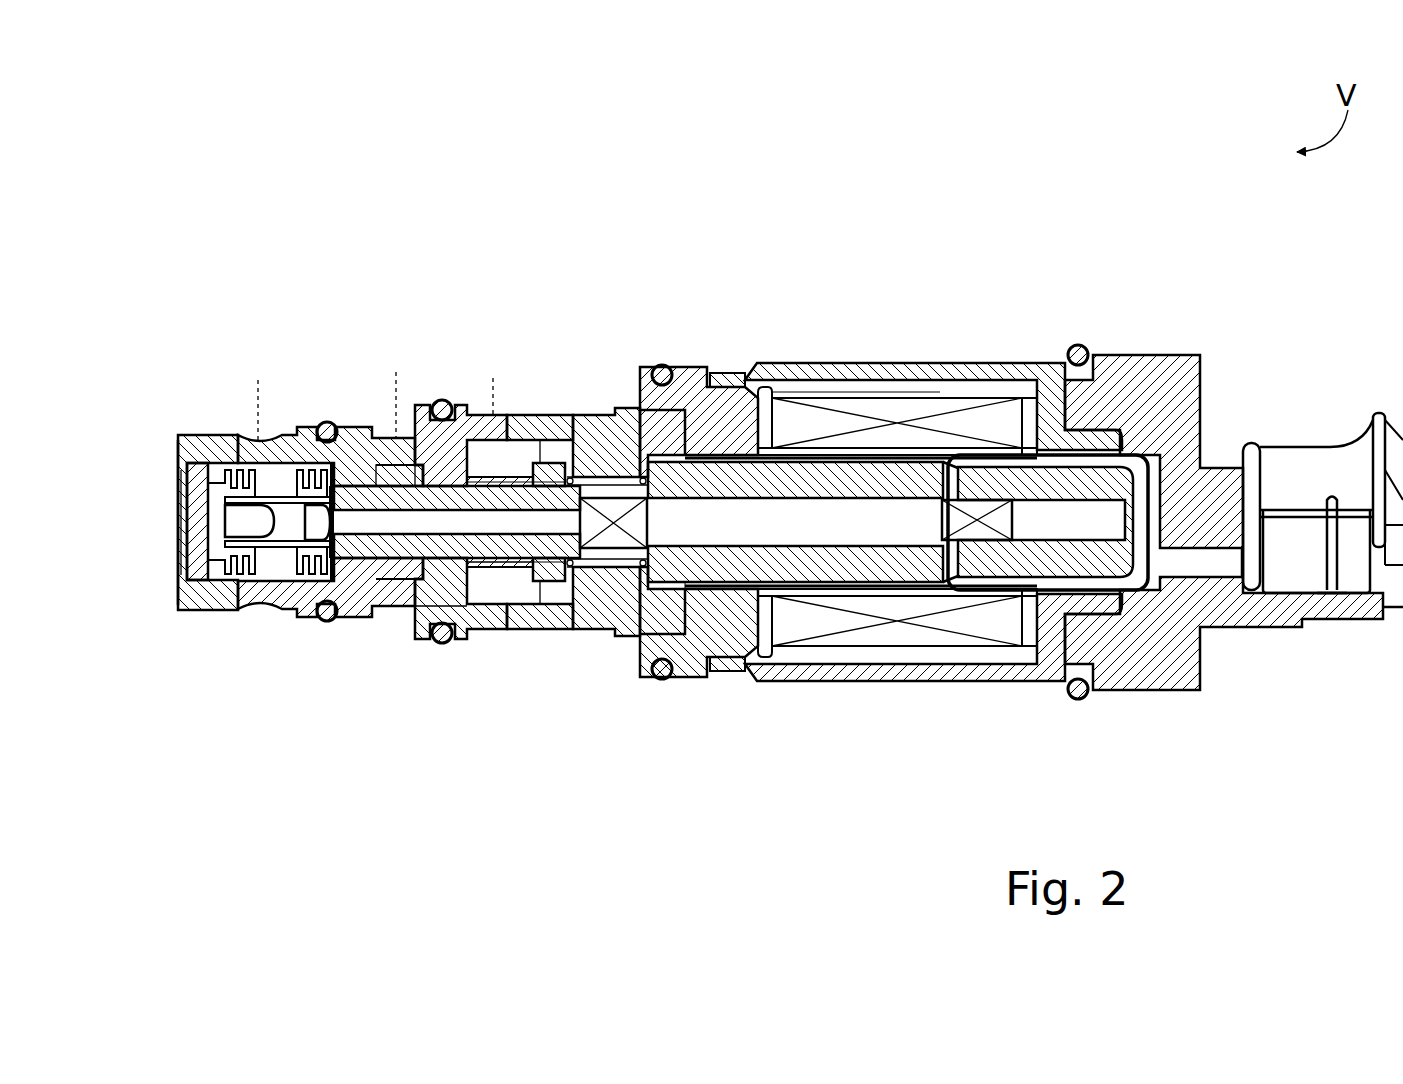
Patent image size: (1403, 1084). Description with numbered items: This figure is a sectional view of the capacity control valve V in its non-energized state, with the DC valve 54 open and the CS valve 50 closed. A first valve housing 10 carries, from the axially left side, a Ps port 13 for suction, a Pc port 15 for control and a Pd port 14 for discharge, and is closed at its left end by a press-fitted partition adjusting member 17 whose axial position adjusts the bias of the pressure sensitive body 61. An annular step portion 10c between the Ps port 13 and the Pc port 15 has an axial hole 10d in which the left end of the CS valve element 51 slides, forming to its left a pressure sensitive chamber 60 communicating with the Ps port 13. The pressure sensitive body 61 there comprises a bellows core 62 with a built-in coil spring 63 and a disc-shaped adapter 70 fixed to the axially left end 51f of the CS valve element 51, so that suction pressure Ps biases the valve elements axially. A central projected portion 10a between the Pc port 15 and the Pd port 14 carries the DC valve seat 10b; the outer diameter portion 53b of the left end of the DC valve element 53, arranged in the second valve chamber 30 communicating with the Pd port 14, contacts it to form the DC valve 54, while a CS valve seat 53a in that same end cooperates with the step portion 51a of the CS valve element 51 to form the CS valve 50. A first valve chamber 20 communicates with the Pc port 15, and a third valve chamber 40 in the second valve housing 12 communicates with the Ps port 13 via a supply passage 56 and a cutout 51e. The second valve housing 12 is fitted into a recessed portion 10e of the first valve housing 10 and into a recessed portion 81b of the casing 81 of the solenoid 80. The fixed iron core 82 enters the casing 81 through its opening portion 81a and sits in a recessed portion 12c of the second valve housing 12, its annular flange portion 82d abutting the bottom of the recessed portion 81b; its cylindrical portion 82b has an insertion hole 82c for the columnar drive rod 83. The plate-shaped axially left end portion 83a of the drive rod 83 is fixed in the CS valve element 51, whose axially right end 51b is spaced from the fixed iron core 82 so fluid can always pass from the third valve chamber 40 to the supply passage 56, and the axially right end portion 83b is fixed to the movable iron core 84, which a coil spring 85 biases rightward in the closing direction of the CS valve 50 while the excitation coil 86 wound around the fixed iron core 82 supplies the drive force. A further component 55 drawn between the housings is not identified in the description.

The first valve housing 10 is at (190, 430).
The central projected portion 10a is at (453, 630).
The DC valve seat 10b is at (540, 465).
The step portion 10c is at (335, 626).
The axial hole 10d is at (378, 620).
The recessed portion 10e is at (583, 632).
The second valve housing 12 is at (623, 652).
The recessed portion 12c is at (700, 686).
The Ps port 13 is at (240, 445).
The Pd port 14 is at (525, 415).
The Pc port 15 is at (395, 440).
The partition adjusting member 17 is at (183, 493).
The first valve chamber 20 is at (430, 405).
The second valve chamber 30 is at (558, 415).
The third valve chamber 40 is at (632, 406).
The CS valve 50 is at (572, 797).
The CS valve element 51 is at (300, 528).
The step portion 51a is at (548, 562).
The axially right end 51b is at (690, 498).
The cutout 51e is at (331, 478).
The axially left end 51f is at (265, 522).
The DC valve element 53 is at (525, 568).
The CS valve seat 53a is at (497, 570).
The outer diameter portion 53b is at (480, 477).
The DC valve 54 is at (527, 193).
The spring 55 is at (593, 478).
The supply passage 56 is at (437, 645).
The pressure sensitive chamber 60 is at (197, 436).
The pressure sensitive body 61 is at (190, 612).
The bellows core 62 is at (213, 612).
The coil spring 63 is at (233, 588).
The adapter 70 is at (323, 622).
The solenoid 80 is at (1158, 348).
The casing 81 is at (705, 586).
The opening portion 81a is at (752, 600).
The recessed portion 81b is at (725, 586).
The fixed iron core 82 is at (935, 395).
The cylindrical portion 82b is at (907, 450).
The insertion hole 82c is at (857, 392).
The flange portion 82d is at (715, 373).
The drive rod 83 is at (968, 372).
The axially left end portion 83a is at (745, 385).
The axially right end portion 83b is at (1068, 352).
The movable iron core 84 is at (1050, 598).
The coil spring 85 is at (985, 648).
The coil 86 is at (912, 642).